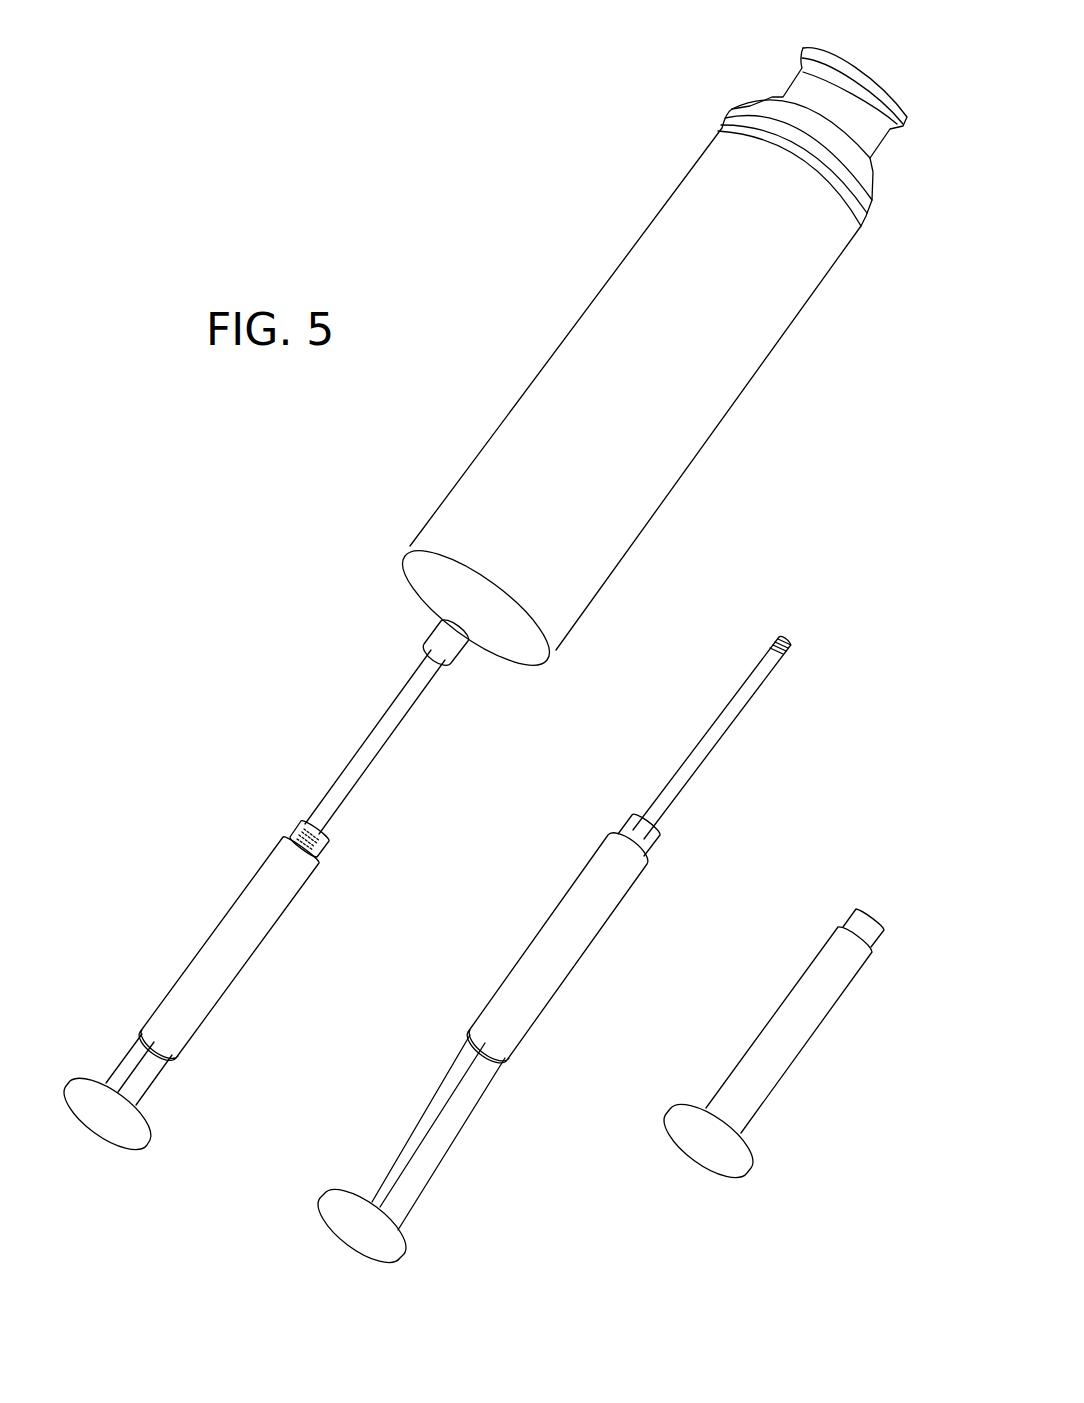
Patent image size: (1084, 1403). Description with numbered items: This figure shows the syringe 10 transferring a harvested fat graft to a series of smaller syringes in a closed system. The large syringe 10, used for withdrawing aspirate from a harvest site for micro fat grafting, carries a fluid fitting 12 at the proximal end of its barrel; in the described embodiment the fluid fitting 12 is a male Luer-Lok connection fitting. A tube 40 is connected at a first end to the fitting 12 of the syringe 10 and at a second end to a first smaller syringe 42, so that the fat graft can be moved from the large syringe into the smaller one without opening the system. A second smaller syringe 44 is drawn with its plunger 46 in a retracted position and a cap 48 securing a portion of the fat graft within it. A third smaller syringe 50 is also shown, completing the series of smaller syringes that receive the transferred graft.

The syringe 10 is at (829, 302).
The fluid fitting 12 is at (467, 657).
The tube 40 is at (377, 735).
The first smaller syringe 42 is at (212, 938).
The second smaller syringe 44 is at (538, 937).
The plunger 46 is at (148, 1078).
The cap 48 is at (300, 822).
The third smaller syringe 50 is at (802, 1020).